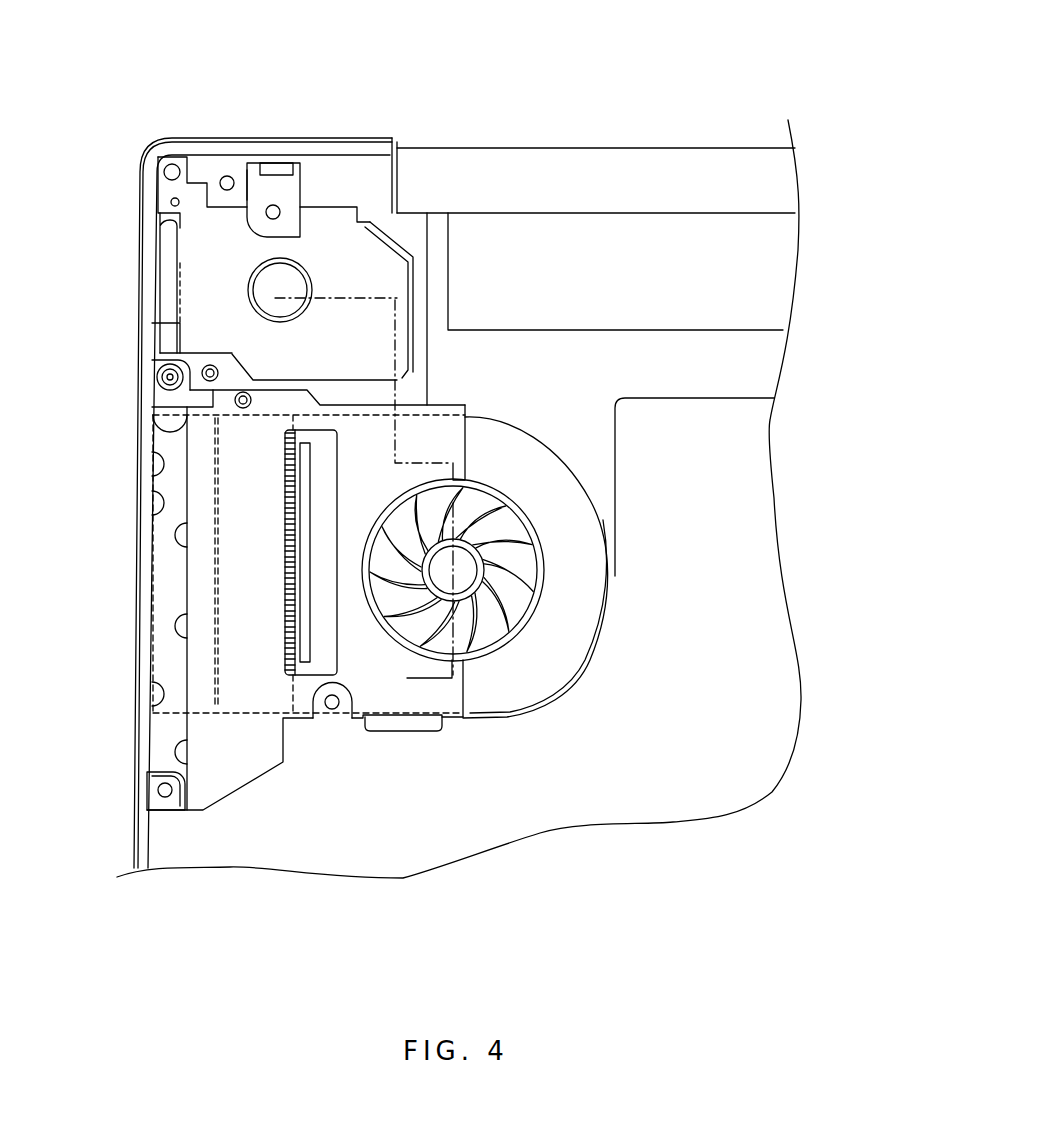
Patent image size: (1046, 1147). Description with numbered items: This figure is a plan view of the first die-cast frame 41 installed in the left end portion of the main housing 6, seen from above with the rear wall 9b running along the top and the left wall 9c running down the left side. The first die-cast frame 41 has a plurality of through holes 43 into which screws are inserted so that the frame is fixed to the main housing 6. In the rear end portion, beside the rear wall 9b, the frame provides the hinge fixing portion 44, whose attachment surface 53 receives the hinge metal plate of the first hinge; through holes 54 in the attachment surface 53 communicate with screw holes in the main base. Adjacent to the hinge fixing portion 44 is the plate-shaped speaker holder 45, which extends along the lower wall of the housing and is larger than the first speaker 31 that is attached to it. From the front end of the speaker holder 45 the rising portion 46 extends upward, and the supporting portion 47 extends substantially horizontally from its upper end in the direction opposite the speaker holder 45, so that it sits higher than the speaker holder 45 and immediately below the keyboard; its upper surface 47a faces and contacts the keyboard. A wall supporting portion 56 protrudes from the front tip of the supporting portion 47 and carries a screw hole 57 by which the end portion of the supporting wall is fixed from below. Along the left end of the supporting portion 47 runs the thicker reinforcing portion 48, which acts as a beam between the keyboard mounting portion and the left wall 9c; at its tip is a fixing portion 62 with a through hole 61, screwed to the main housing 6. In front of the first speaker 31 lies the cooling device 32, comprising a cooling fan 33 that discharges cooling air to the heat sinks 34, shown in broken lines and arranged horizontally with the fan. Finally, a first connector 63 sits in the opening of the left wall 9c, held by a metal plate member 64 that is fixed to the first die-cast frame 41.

The main housing 6 is at (120, 848).
The rear wall 9b is at (332, 138).
The left wall 9c is at (133, 615).
The first speaker 31 is at (190, 245).
The cooling device 32 is at (590, 475).
The cooling fan 33 is at (535, 660).
The heat sink 34 is at (163, 713).
The first die-cast frame 41 is at (150, 658).
The through holes 43 is at (157, 377).
The hinge fixing portion 44 is at (248, 172).
The speaker holder 45 is at (420, 353).
The rising portion 46 is at (408, 397).
The supporting portion 47 is at (390, 695).
The surface 47a is at (283, 598).
The reinforcing portion 48 is at (173, 503).
The attachment surface 53 is at (295, 185).
The through holes 54 is at (165, 168).
The wall supporting portion 56 is at (318, 712).
The screw hole 57 is at (333, 709).
The through hole 61 is at (168, 797).
The fixing portion 62 is at (152, 800).
The first connector 63 is at (152, 327).
The metal plate member 64 is at (167, 288).